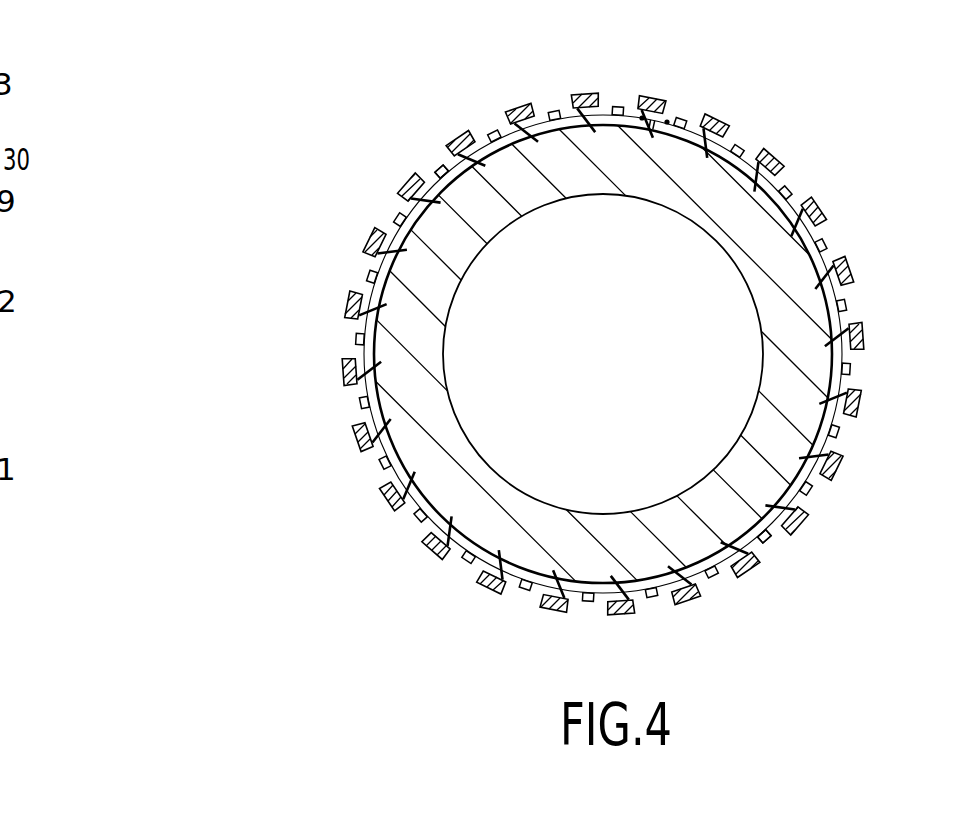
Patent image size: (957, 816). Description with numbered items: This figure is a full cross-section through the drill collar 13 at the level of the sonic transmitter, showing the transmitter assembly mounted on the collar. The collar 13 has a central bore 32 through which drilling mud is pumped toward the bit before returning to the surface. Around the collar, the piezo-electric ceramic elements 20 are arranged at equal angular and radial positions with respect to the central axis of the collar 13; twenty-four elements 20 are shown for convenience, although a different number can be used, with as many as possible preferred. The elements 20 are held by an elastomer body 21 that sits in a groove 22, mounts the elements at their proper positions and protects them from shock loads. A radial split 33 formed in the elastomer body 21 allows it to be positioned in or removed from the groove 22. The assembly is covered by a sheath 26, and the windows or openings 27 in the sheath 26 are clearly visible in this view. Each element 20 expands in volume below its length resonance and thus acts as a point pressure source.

The drill collar 13 is at (798, 254).
The piezo-electric ceramic elements 20 is at (618, 113).
The elastomer body 21 is at (468, 142).
The groove 22 is at (740, 148).
The sheath 26 is at (396, 198).
The windows or openings 27 is at (436, 162).
The central bore 32 is at (633, 408).
The radial split 33 is at (664, 113).